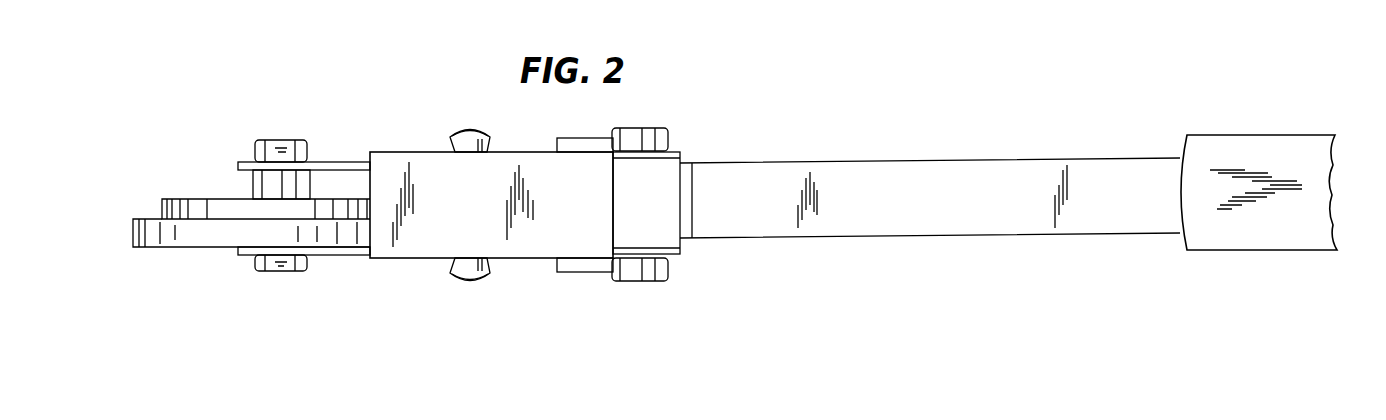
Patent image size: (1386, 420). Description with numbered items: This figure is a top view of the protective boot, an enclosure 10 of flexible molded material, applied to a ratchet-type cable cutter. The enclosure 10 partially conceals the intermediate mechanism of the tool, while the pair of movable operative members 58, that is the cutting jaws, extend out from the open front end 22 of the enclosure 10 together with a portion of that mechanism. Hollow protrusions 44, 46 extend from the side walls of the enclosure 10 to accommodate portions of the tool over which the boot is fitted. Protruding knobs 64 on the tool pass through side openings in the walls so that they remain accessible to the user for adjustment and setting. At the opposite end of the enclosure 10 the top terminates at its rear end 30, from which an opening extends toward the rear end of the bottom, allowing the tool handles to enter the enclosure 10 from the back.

The enclosure 10 is at (388, 270).
The front end 22 is at (367, 173).
The rear end of the top 30 is at (620, 197).
The hollow protrusion 44 is at (645, 128).
The hollow protrusion 46 is at (590, 138).
The movable operative members 58 is at (215, 228).
The protruding knobs 64 is at (464, 128).